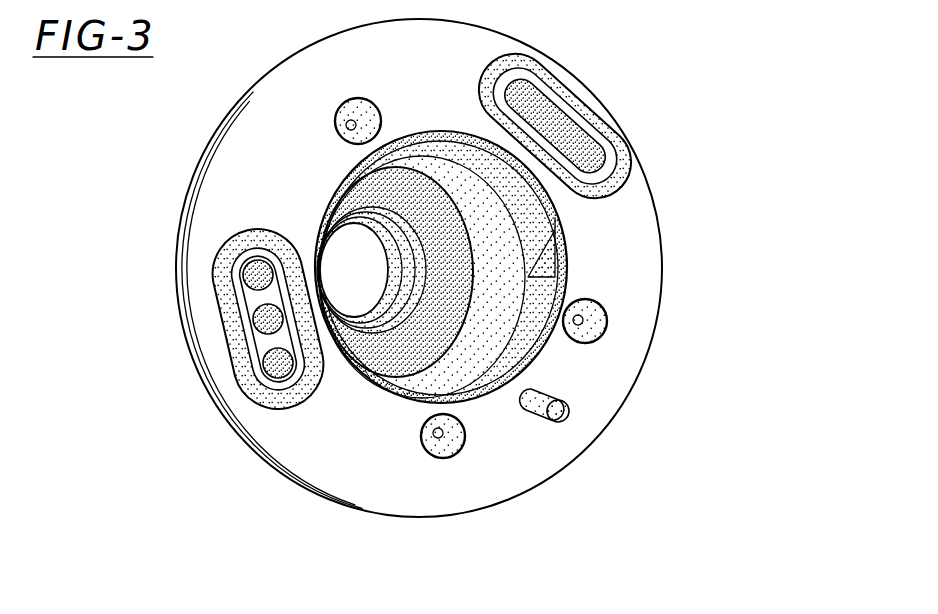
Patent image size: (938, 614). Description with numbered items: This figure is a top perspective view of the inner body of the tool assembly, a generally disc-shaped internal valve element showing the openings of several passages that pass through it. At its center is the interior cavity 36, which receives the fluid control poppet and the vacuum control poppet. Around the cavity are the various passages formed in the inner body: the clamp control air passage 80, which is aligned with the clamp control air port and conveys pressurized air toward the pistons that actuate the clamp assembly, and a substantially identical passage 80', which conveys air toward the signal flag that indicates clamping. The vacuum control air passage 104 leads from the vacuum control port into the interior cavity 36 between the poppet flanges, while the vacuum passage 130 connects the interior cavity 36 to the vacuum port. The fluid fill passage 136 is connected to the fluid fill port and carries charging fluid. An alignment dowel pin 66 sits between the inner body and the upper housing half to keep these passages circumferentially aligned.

The interior cavity 36 is at (533, 340).
The alignment dowel pin 66 is at (557, 420).
The clamp control air passage 80 is at (638, 313).
The clamp control air passage 80' is at (332, 73).
The vacuum control air passage 104 is at (438, 433).
The vacuum passage 130 is at (537, 213).
The fluid fill passage 136 is at (270, 287).